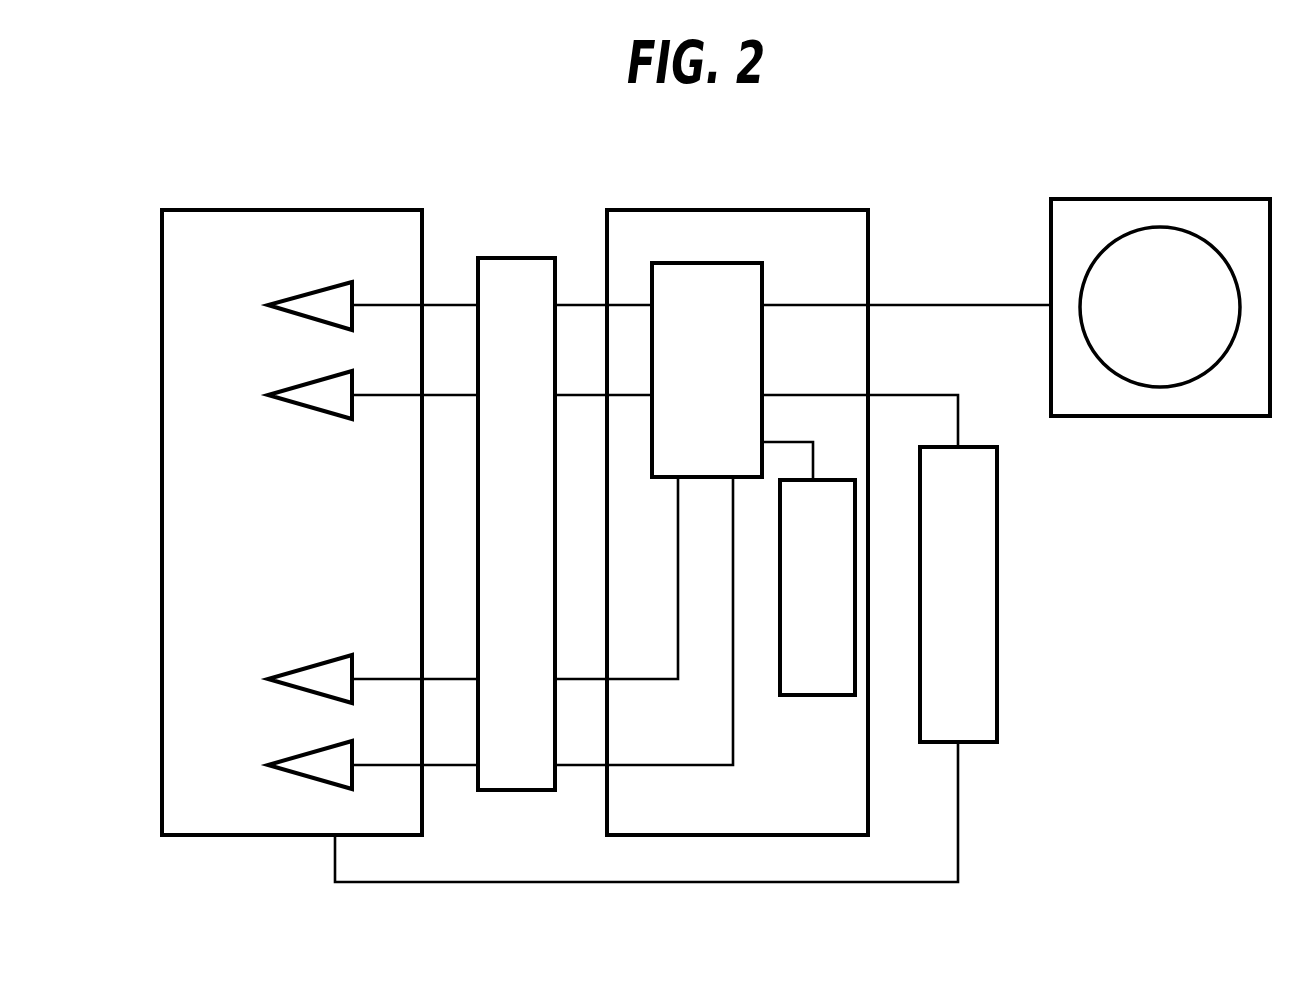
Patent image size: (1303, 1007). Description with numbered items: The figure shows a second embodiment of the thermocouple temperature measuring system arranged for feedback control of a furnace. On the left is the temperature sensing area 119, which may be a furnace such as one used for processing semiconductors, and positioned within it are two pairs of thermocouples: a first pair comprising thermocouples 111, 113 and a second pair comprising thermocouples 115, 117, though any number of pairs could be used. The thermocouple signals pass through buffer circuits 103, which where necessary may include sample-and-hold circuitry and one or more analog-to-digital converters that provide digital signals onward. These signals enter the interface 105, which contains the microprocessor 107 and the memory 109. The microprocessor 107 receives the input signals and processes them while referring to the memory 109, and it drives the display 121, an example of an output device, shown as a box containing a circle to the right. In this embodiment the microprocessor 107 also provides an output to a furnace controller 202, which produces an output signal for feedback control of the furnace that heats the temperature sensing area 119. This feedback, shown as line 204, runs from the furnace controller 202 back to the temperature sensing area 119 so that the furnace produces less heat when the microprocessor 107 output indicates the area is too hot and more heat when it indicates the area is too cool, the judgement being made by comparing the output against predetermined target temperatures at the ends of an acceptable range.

The buffer circuits 103 is at (508, 258).
The interface 105 is at (735, 212).
The microprocessor 107 is at (762, 290).
The memory 109 is at (845, 697).
The thermocouple 111 is at (310, 291).
The thermocouple 113 is at (310, 381).
The thermocouple 115 is at (310, 665).
The thermocouple 117 is at (310, 752).
The temperature sensing area 119 is at (255, 835).
The display 121 is at (1198, 199).
The furnace controller 202 is at (997, 490).
The feedback line 204 is at (959, 865).